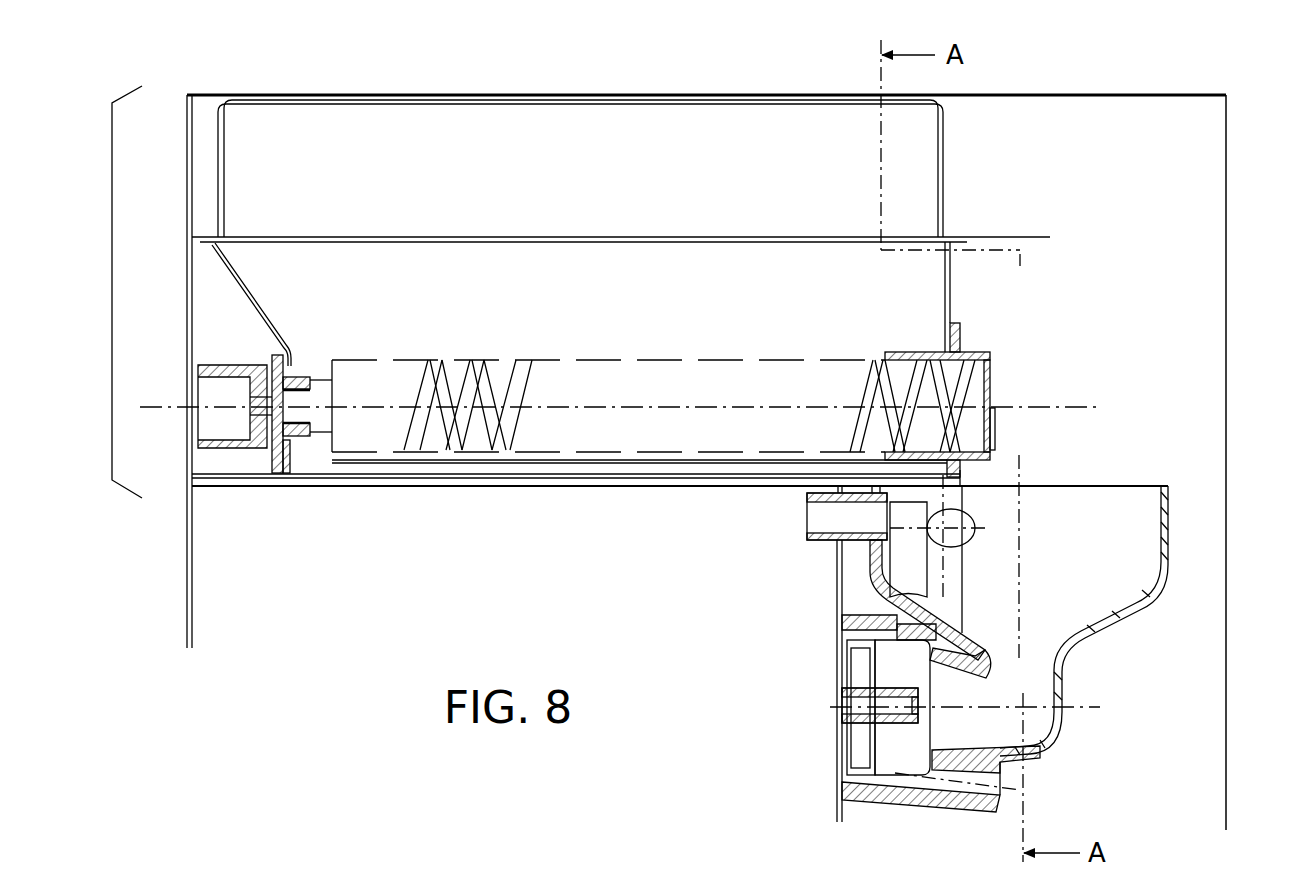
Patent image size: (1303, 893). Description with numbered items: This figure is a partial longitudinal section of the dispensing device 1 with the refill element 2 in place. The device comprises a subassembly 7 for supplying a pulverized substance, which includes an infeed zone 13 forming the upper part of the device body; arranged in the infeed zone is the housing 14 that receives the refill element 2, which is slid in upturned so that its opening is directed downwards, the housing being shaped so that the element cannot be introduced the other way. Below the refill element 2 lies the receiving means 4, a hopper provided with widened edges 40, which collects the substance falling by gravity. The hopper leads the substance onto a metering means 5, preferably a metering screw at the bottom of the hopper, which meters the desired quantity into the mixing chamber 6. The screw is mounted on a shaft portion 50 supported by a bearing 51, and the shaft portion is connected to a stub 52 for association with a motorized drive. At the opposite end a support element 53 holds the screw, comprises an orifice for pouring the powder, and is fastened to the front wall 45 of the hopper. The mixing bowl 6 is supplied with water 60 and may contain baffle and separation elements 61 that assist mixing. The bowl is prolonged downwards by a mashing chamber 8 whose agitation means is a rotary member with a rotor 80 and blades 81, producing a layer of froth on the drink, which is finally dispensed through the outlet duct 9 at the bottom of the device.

The dishwasher 1 is at (317, 620).
The refill element 2 is at (756, 133).
The receiving means 4 is at (383, 274).
The metering means 5 is at (524, 415).
The mixing chamber 6 is at (1130, 561).
The subassembly 7 is at (110, 291).
The mashing chamber 8 is at (883, 669).
The outlet duct 9 is at (1010, 803).
The infeed zone 13 is at (1024, 166).
The housing 14 is at (200, 118).
The widened edge 40 is at (302, 302).
The front wall 45 is at (952, 276).
The shaft portion 50 is at (285, 395).
The bearing 51 is at (316, 407).
The stub 52 is at (219, 438).
The support element 53 is at (990, 356).
The water 60 is at (826, 527).
The baffle and separation elements 61 is at (950, 533).
The rotor 80 is at (877, 702).
The blades 81 is at (867, 738).